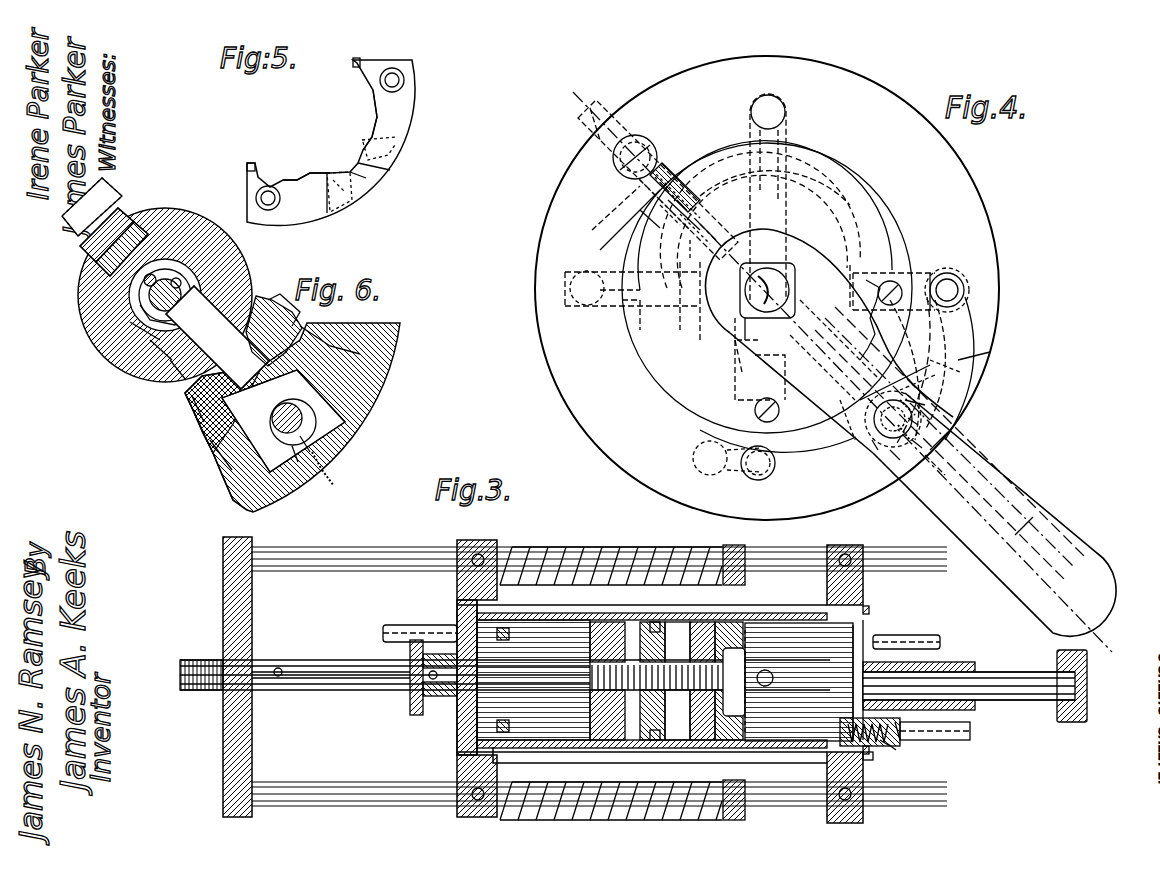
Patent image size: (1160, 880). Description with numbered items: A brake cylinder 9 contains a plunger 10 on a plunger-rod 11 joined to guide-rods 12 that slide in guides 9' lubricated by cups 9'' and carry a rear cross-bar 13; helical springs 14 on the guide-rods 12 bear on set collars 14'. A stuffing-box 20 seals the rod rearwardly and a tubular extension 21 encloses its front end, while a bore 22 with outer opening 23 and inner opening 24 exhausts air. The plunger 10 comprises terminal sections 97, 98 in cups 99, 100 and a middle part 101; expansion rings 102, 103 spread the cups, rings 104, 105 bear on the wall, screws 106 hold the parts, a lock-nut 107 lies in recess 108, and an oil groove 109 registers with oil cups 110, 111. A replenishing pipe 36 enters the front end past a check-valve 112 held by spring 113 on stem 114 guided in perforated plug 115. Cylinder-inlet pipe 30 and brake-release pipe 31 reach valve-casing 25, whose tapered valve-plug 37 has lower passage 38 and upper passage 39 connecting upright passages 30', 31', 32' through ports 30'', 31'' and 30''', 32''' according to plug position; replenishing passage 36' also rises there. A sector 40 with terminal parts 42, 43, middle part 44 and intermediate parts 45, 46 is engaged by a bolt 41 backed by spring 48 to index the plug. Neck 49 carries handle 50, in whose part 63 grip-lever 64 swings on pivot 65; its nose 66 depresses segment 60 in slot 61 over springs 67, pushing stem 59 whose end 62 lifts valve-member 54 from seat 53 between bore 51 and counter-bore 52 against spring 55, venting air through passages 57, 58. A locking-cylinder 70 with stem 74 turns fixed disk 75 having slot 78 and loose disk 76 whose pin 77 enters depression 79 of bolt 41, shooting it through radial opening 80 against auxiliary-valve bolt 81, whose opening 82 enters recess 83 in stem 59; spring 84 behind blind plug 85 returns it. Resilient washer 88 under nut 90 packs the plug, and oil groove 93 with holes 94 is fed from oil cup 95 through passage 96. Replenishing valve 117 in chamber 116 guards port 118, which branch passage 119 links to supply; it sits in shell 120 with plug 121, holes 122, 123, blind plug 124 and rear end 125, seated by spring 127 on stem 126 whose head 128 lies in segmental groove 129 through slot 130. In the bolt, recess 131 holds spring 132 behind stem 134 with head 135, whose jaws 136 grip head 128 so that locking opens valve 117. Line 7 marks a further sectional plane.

In FIG. 4, the section line 7 is at (841, 375).
In FIG. 3, the cylinder body 9 is at (618, 681).
In FIG. 3, the body flange 9' is at (662, 680).
In FIG. 3, the flange bolt 9'' is at (639, 679).
In FIG. 3, the piston head 10 is at (742, 705).
In FIG. 3, the central shaft 11 is at (346, 692).
In FIG. 3, the guide rod 12 is at (356, 560).
In FIG. 3, the end plate 13 is at (252, 720).
In FIG. 3, the coil spring 14 is at (611, 679).
In FIG. 3, the spring nut 14' is at (749, 692).
In FIG. 3, the collar 20 is at (430, 688).
In FIG. 3, the screw shaft 21 is at (962, 664).
In FIG. 3, the tube 22 is at (305, 664).
In FIG. 3, the pin hole 23 is at (278, 668).
In FIG. 3, the bushing 24 is at (410, 692).
In FIG. 6, the disk 25 is at (382, 350).
In FIG. 4, the disk 25 is at (970, 197).
In FIG. 3, the pipe 30 is at (925, 630).
In FIG. 4, the bolt 30' is at (990, 276).
In FIG. 4, the bolt head 30'' is at (962, 275).
In FIG. 4, the slot end 30''' is at (942, 270).
In FIG. 3, the pipe 31 is at (412, 620).
In FIG. 4, the bolt 31' is at (790, 192).
In FIG. 4, the slot 31'' is at (804, 153).
In FIG. 4, the bolt 32' is at (629, 313).
In FIG. 4, the slot 32''' is at (615, 336).
In FIG. 3, the valve tube 36 is at (915, 749).
In FIG. 4, the guide 36' is at (608, 211).
In FIG. 6, the hub 37 is at (172, 376).
In FIG. 4, the hub 37 is at (802, 236).
In FIG. 4, the slot 38 is at (832, 266).
In FIG. 4, the square hub 39 is at (778, 258).
In FIG. 5, the segment plate 40 is at (400, 120).
In FIG. 6, the segment plate 40 is at (190, 418).
In FIG. 4, the segment plate 40 is at (876, 320).
In FIG. 6, the clamp arm 41 is at (120, 290).
In FIG. 4, the clamp arm 41 is at (722, 332).
In FIG. 5, the recess 42 is at (290, 178).
In FIG. 6, the recess 42 is at (192, 404).
In FIG. 4, the recess 42 is at (756, 378).
In FIG. 5, the notch 43 is at (372, 100).
In FIG. 6, the notch 43 is at (258, 298).
In FIG. 4, the notch 43 is at (858, 286).
In FIG. 5, the edge 44 is at (366, 175).
In FIG. 6, the edge 44 is at (355, 352).
In FIG. 4, the edge 44 is at (902, 362).
In FIG. 5, the arc edge 45 is at (330, 200).
In FIG. 6, the arc edge 45 is at (215, 442).
In FIG. 4, the arc edge 45 is at (850, 412).
In FIG. 5, the shoulder 46 is at (385, 142).
In FIG. 6, the shoulder 46 is at (298, 322).
In FIG. 4, the shoulder 46 is at (878, 332).
In FIG. 6, the key 48 is at (108, 270).
In FIG. 4, the stud 49 is at (742, 324).
In FIG. 4, the handle 50 is at (925, 462).
In FIG. 4, the pin 51 is at (906, 402).
In FIG. 4, the spring 52 is at (936, 376).
In FIG. 4, the pawl 53 is at (910, 420).
In FIG. 4, the screw 54 is at (856, 446).
In FIG. 4, the pin 55 is at (896, 472).
In FIG. 4, the guide slot 57 is at (952, 322).
In FIG. 4, the bolt 58 is at (712, 474).
In FIG. 6, the hole 59 is at (318, 420).
In FIG. 4, the hole 59 is at (916, 442).
In FIG. 4, the bolt 60 is at (962, 304).
In FIG. 4, the arm 61 is at (960, 362).
In FIG. 4, the spring 62 is at (922, 411).
In FIG. 4, the rod 63 is at (1025, 535).
In FIG. 4, the rod 64 is at (1010, 522).
In FIG. 4, the collar 65 is at (940, 458).
In FIG. 4, the pin 66 is at (937, 362).
In FIG. 4, the guide arc 67 is at (968, 290).
In FIG. 4, the stud 70 is at (745, 360).
In FIG. 6, the disk 74 is at (243, 280).
In FIG. 6, the hub 75 is at (140, 336).
In FIG. 6, the ring 76 is at (160, 356).
In FIG. 6, the pin 77 is at (184, 312).
In FIG. 6, the recess 78 is at (160, 320).
In FIG. 6, the shaft 79 is at (165, 278).
In FIG. 5, the block 80 is at (352, 182).
In FIG. 6, the block 80 is at (280, 374).
In FIG. 6, the pin 81 is at (322, 430).
In FIG. 4, the pin 81 is at (876, 448).
In FIG. 6, the link 82 is at (300, 433).
In FIG. 4, the link 82 is at (936, 468).
In FIG. 6, the pin 83 is at (292, 456).
In FIG. 6, the spring 84 is at (320, 472).
In FIG. 4, the spring 84 is at (902, 428).
In FIG. 6, the spring 85 is at (322, 468).
In FIG. 4, the spring 85 is at (906, 404).
In FIG. 4, the ring 88 is at (848, 272).
In FIG. 4, the hub 90 is at (820, 262).
In FIG. 4, the ring 93 is at (835, 240).
In FIG. 5, the screw 94 is at (352, 64).
In FIG. 4, the screw 94 is at (872, 275).
In FIG. 4, the rod 95 is at (632, 158).
In FIG. 4, the block 96 is at (664, 174).
In FIG. 3, the piston 97 is at (770, 650).
In FIG. 3, the sleeve 98 is at (580, 640).
In FIG. 3, the washer 99 is at (724, 622).
In FIG. 3, the disk 100 is at (612, 628).
In FIG. 3, the spring 101 is at (665, 660).
In FIG. 3, the line 102 is at (748, 720).
In FIG. 3, the disk 103 is at (630, 742).
In FIG. 3, the disk 104 is at (700, 742).
In FIG. 3, the disk 105 is at (676, 742).
In FIG. 3, the packing 106 is at (504, 626).
In FIG. 3, the screw 107 is at (870, 606).
In FIG. 3, the screw 108 is at (868, 752).
In FIG. 3, the packing 109 is at (660, 622).
In FIG. 3, the wall 110 is at (868, 632).
In FIG. 3, the pin 111 is at (462, 692).
In FIG. 3, the valve 112 is at (902, 740).
In FIG. 3, the valve body 113 is at (960, 718).
In FIG. 3, the seat 114 is at (890, 748).
In FIG. 3, the port 115 is at (884, 744).
In FIG. 4, the block 116 is at (660, 212).
In FIG. 4, the slide 117 is at (692, 192).
In FIG. 4, the pin 118 is at (672, 242).
In FIG. 4, the slot 119 is at (700, 292).
In FIG. 4, the bar 120 is at (640, 116).
In FIG. 4, the bolt 121 is at (593, 142).
In FIG. 4, the slot 122 is at (642, 166).
In FIG. 4, the pin 123 is at (666, 208).
In FIG. 4, the edge 124 is at (600, 118).
In FIG. 4, the slot 125 is at (680, 296).
In FIG. 4, the pin 126 is at (722, 206).
In FIG. 4, the pin 127 is at (700, 176).
In FIG. 4, the arc 128 is at (724, 240).
In FIG. 4, the arc 129 is at (796, 200).
In FIG. 4, the slot 130 is at (779, 192).
In FIG. 6, the pin 131 is at (180, 278).
In FIG. 6, the ring 132 is at (140, 300).
In FIG. 6, the key 134 is at (105, 248).
In FIG. 6, the pin 135 is at (150, 262).
In FIG. 6, the bar 136 is at (110, 212).
In FIG. 4, the bar 136 is at (640, 322).